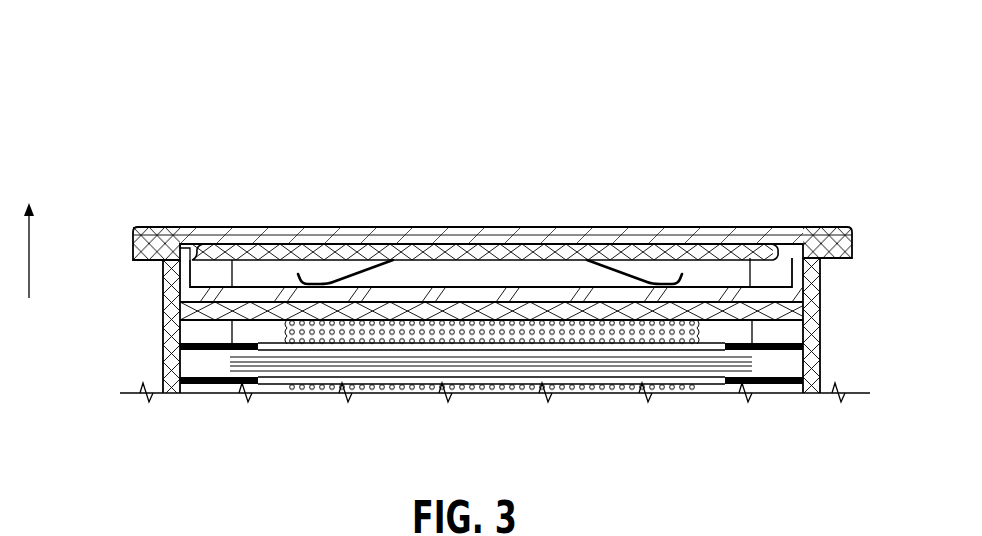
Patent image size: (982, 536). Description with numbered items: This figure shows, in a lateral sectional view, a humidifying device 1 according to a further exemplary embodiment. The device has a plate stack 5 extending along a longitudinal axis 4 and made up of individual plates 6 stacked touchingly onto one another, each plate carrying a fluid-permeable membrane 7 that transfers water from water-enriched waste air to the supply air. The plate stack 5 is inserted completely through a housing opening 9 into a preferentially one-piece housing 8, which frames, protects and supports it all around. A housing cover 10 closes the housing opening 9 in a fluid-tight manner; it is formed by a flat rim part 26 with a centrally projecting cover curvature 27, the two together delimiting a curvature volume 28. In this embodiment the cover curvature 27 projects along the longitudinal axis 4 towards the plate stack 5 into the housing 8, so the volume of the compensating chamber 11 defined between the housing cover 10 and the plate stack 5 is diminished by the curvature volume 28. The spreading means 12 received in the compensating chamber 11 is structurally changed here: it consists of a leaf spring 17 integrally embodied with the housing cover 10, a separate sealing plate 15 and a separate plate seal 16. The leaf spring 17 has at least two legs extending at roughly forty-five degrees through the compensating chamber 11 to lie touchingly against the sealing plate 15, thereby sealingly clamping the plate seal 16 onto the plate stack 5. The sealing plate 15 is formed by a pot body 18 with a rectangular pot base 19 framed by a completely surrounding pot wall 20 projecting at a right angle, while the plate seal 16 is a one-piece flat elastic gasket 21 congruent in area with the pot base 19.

The humidifying device 1 is at (840, 136).
The longitudinal axis 4 is at (31, 238).
The plate stack 5 is at (495, 401).
The individual plates 6 is at (213, 393).
The fluid-permeable membrane 7 is at (407, 390).
The housing 8 is at (822, 307).
The housing opening 9 is at (178, 230).
The housing cover 10 is at (491, 227).
The compensating chamber 11 is at (264, 252).
The spreading means 12 is at (490, 223).
The sealing plate 15 is at (820, 275).
The plate seal 16 is at (542, 319).
The leaf spring 17 is at (615, 272).
The pot body 18 is at (120, 325).
The pot base 19 is at (165, 310).
The pot wall 20 is at (163, 267).
The flat elastic gasket 21 is at (767, 320).
The flat rim part 26 is at (310, 255).
The cover curvature 27 is at (657, 250).
The curvature volume 28 is at (702, 230).